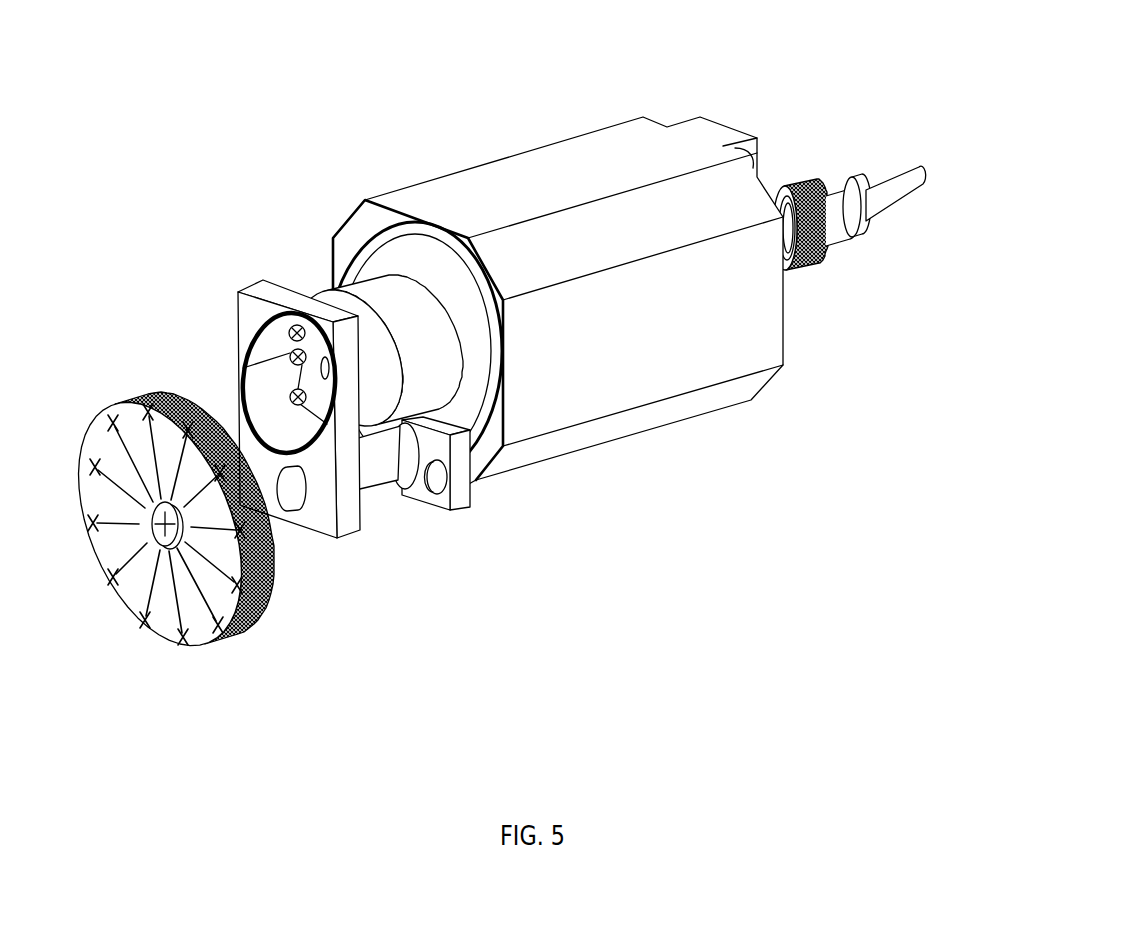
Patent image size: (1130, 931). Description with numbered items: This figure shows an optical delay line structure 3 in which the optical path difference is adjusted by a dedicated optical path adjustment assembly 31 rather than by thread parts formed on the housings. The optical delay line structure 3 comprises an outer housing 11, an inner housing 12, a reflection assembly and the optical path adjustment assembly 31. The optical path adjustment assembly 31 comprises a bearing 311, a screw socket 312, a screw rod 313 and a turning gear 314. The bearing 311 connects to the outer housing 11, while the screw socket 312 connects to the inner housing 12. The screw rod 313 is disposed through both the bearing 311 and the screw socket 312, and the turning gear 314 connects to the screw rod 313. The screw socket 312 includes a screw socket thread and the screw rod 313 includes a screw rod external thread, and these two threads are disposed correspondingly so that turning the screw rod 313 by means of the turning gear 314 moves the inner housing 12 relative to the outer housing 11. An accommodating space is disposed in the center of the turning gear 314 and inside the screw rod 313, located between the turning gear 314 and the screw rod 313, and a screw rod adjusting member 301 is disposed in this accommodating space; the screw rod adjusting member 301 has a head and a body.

The optical delay line structure 3 is at (571, 397).
The outer housing 11 is at (532, 257).
The inner housing 12 is at (400, 300).
The optical path adjustment assembly 31 is at (283, 523).
The bearing 311 is at (413, 480).
The screw socket 312 is at (350, 513).
The screw rod 313 is at (286, 505).
The turning gear 314 is at (161, 558).
The screw rod adjusting member 301 is at (147, 600).